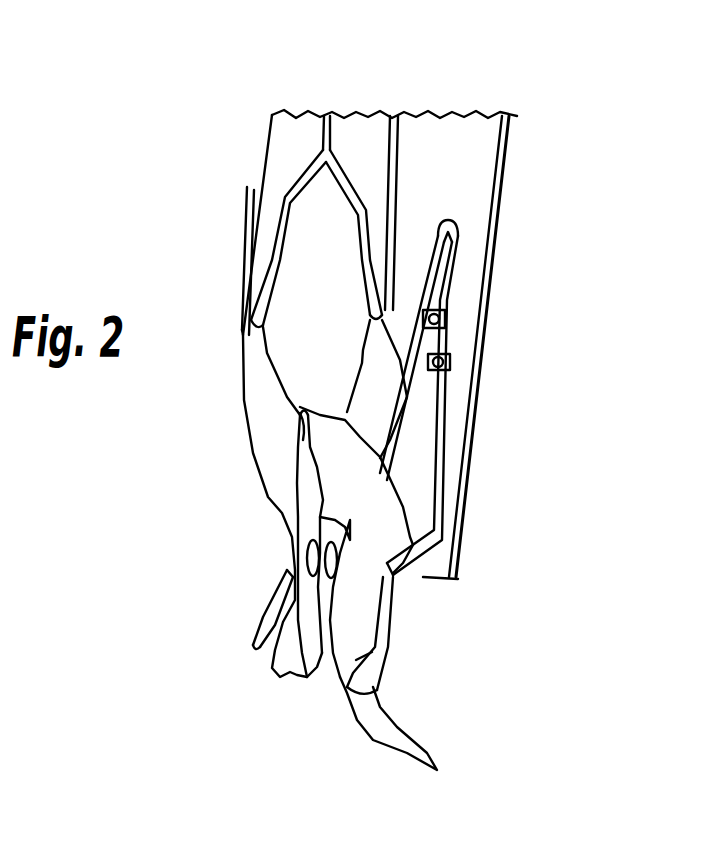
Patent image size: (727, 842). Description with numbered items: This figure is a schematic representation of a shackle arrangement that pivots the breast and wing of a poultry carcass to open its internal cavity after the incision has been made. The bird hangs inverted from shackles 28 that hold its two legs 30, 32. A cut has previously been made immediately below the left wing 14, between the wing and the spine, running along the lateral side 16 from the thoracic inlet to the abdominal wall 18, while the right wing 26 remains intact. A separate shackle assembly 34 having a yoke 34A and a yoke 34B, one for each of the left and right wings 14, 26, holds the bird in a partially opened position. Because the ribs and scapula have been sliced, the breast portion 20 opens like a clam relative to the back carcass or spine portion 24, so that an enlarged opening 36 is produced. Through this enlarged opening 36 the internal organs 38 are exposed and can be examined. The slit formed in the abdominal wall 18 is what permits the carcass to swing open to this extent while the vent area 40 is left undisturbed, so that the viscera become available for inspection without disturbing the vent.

The left wing 14 is at (418, 750).
The lateral side 16 is at (310, 484).
The abdominal wall 18 is at (300, 423).
The breast portion 20 is at (367, 583).
The back carcass portion 24 is at (306, 550).
The right wing 26 is at (232, 647).
The shackles 28 is at (353, 193).
The leg 30 is at (253, 370).
The leg 32 is at (377, 368).
The shackle assembly 34 is at (447, 400).
The yoke 34A is at (372, 668).
The yoke 34B is at (273, 610).
The enlarged opening 36 is at (338, 531).
The internal organs 38 is at (323, 653).
The vent area 40 is at (300, 417).